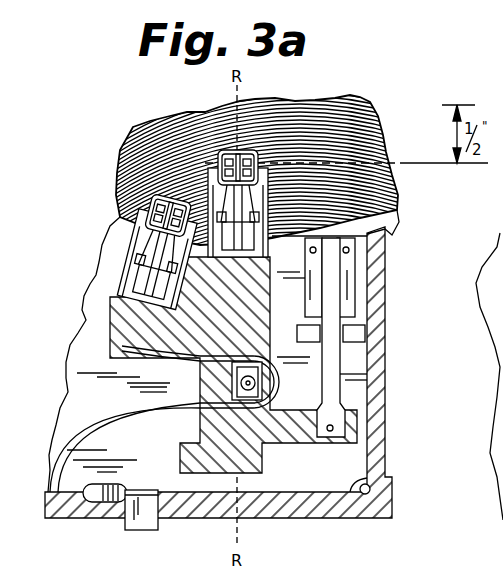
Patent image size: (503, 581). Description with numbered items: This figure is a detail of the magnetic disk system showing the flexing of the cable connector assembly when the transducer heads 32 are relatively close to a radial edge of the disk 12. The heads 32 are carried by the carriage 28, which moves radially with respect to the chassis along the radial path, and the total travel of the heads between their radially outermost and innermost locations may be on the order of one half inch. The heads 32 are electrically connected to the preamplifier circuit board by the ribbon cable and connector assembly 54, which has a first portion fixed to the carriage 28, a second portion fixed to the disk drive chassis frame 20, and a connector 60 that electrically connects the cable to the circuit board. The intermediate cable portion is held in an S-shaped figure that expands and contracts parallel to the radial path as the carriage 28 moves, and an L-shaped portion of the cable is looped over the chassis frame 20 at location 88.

The disk 12 is at (346, 136).
The disk drive chassis frame 20 is at (262, 502).
The carriage 28 is at (132, 316).
The transducer heads 32 is at (240, 150).
The ribbon cable and connector assembly 54 is at (112, 412).
The connector 60 is at (143, 522).
The location 88 is at (96, 497).